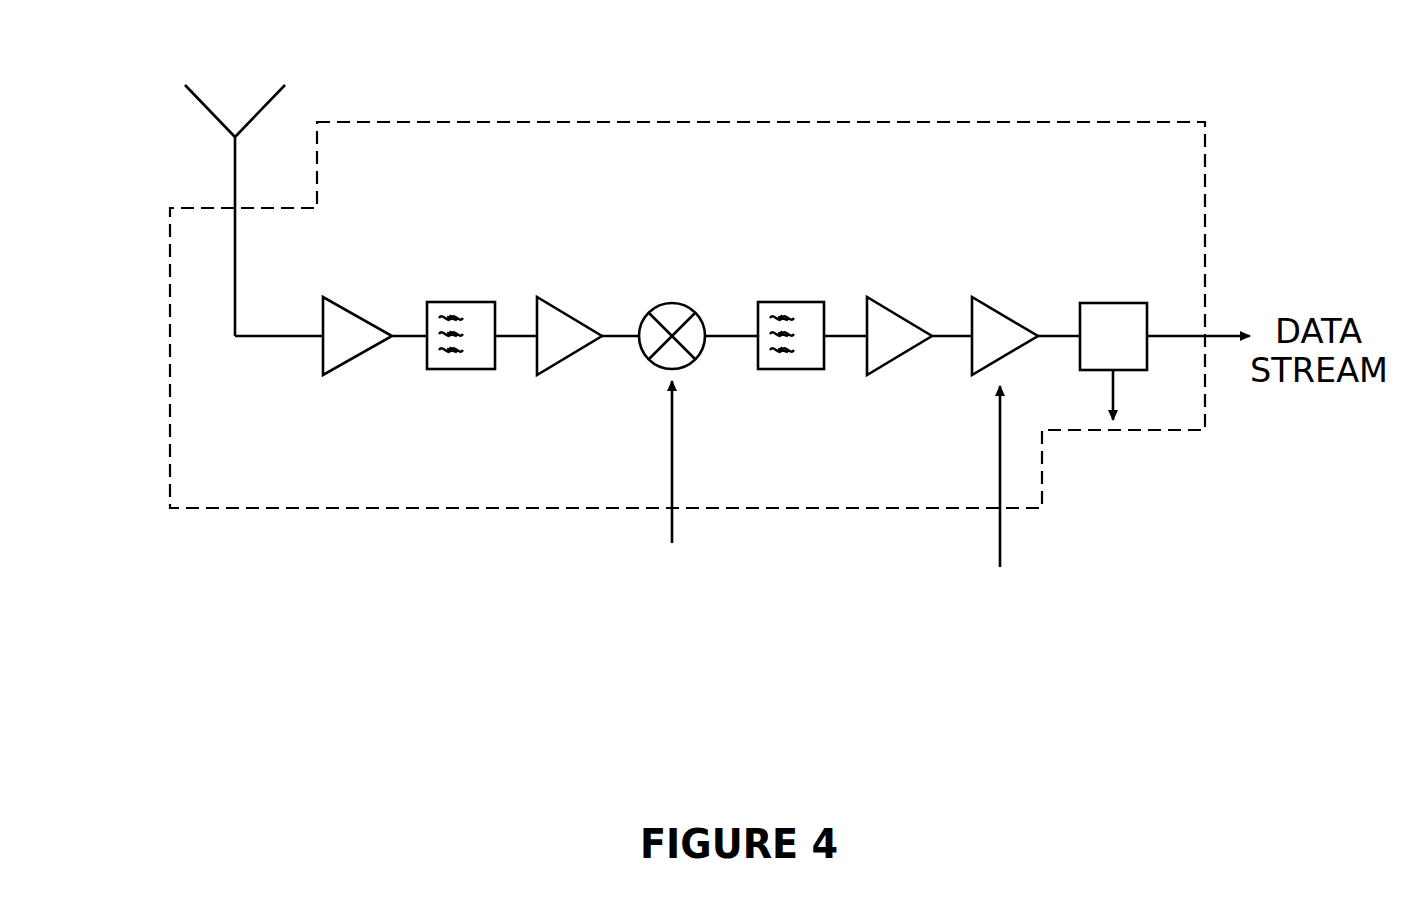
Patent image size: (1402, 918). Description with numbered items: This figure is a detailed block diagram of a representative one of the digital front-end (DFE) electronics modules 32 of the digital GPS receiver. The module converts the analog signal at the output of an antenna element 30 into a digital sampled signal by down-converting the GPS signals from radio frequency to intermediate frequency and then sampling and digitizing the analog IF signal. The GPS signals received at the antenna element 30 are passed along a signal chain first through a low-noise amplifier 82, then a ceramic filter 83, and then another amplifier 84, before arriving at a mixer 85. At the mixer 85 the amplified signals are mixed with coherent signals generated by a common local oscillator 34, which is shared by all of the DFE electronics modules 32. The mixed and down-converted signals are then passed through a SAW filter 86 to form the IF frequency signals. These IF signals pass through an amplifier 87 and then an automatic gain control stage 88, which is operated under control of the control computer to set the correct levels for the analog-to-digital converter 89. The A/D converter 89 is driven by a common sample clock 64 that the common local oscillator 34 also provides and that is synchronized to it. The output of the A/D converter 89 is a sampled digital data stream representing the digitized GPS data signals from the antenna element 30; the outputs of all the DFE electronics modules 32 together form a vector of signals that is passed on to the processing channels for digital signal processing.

The antenna element 30 is at (222, 186).
The DFE electronics module 32 is at (921, 122).
The low-noise amplifier 82 is at (322, 306).
The ceramic filter 83 is at (427, 302).
The amplifier 84 is at (555, 307).
The mixer 85 is at (647, 307).
The common local oscillator 34 is at (672, 545).
The SAW filter 86 is at (758, 303).
The amplifier 87 is at (905, 312).
The automatic gain control stage 88 is at (1029, 328).
The analog-to-digital (A/D) converter 89 is at (1140, 303).
The common sample clock 64 is at (1137, 486).